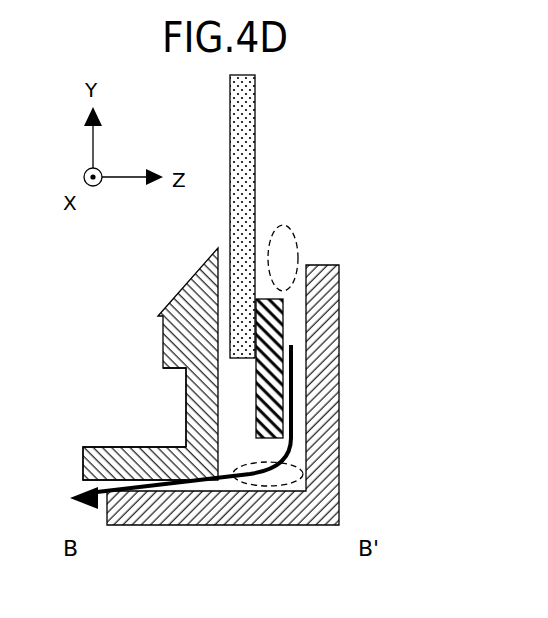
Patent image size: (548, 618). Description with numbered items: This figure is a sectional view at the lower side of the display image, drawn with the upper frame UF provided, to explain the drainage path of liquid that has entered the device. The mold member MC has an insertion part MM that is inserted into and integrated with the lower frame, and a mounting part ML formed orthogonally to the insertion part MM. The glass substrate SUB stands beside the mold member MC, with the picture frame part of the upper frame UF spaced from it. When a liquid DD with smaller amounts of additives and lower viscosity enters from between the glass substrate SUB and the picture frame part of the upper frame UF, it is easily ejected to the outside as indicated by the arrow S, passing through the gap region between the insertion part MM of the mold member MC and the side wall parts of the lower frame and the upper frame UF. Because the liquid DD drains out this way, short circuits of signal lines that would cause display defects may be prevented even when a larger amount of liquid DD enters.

The glass substrate SUB is at (247, 92).
The mounting part ML is at (185, 294).
The insertion part MM is at (92, 455).
The mold member MC is at (122, 409).
The upper frame UF is at (336, 265).
The arrow S is at (80, 483).
The liquid DD is at (287, 226).